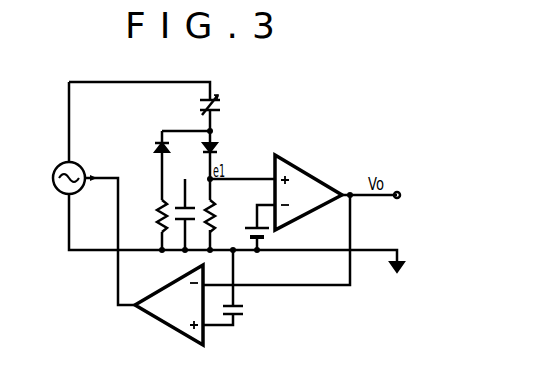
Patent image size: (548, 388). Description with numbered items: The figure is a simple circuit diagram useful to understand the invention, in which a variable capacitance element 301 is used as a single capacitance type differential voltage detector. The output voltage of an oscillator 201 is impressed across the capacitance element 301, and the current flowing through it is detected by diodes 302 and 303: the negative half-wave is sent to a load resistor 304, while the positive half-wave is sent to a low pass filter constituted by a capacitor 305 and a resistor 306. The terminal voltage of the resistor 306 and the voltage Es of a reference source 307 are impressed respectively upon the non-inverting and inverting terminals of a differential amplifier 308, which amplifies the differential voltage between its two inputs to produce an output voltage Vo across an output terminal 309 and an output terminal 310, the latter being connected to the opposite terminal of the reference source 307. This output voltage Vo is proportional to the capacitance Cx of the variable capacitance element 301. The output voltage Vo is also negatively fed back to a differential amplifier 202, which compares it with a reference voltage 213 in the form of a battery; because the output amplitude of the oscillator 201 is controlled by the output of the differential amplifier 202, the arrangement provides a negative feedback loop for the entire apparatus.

The oscillator 201 is at (77, 165).
The differential amplifier 202 is at (169, 305).
The reference voltage 213 is at (247, 311).
The variable capacitance element 301 is at (226, 94).
The diode 302 is at (159, 147).
The diode 303 is at (214, 147).
The load resistor 304 is at (158, 223).
The capacitor 305 is at (182, 205).
The resistor 306 is at (223, 213).
The reference source 307 is at (262, 231).
The differential amplifier 308 is at (308, 192).
The output terminal 309 is at (412, 196).
The output terminal 310 is at (410, 268).